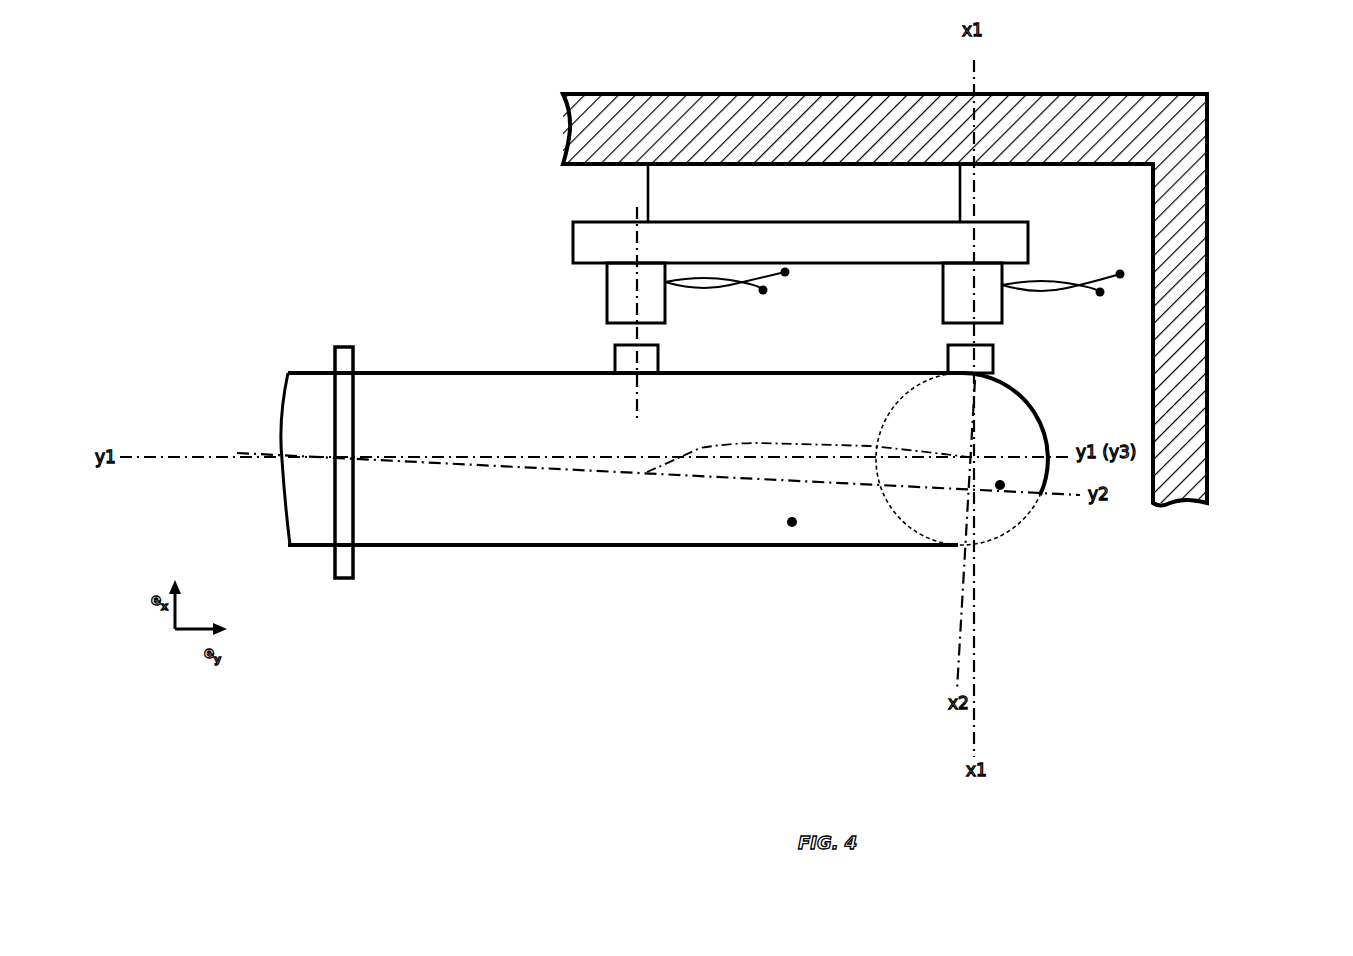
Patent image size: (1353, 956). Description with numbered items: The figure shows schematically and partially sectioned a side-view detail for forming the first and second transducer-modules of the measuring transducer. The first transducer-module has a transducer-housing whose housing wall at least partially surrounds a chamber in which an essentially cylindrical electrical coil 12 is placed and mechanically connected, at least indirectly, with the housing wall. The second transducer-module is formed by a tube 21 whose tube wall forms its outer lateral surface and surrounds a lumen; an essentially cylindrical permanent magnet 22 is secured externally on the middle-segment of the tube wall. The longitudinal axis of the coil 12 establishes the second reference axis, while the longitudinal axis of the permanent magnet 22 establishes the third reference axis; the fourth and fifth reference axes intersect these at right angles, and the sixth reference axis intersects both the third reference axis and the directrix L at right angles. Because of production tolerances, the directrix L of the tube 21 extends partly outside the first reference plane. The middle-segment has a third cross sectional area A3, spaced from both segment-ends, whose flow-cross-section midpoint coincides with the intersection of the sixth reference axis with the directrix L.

The first electrical coil 12 is at (1002, 310).
The first permanent magnet 22 is at (985, 362).
The tube 21 is at (664, 461).
The directrix L is at (545, 468).
The third cross sectional area A3 is at (929, 552).